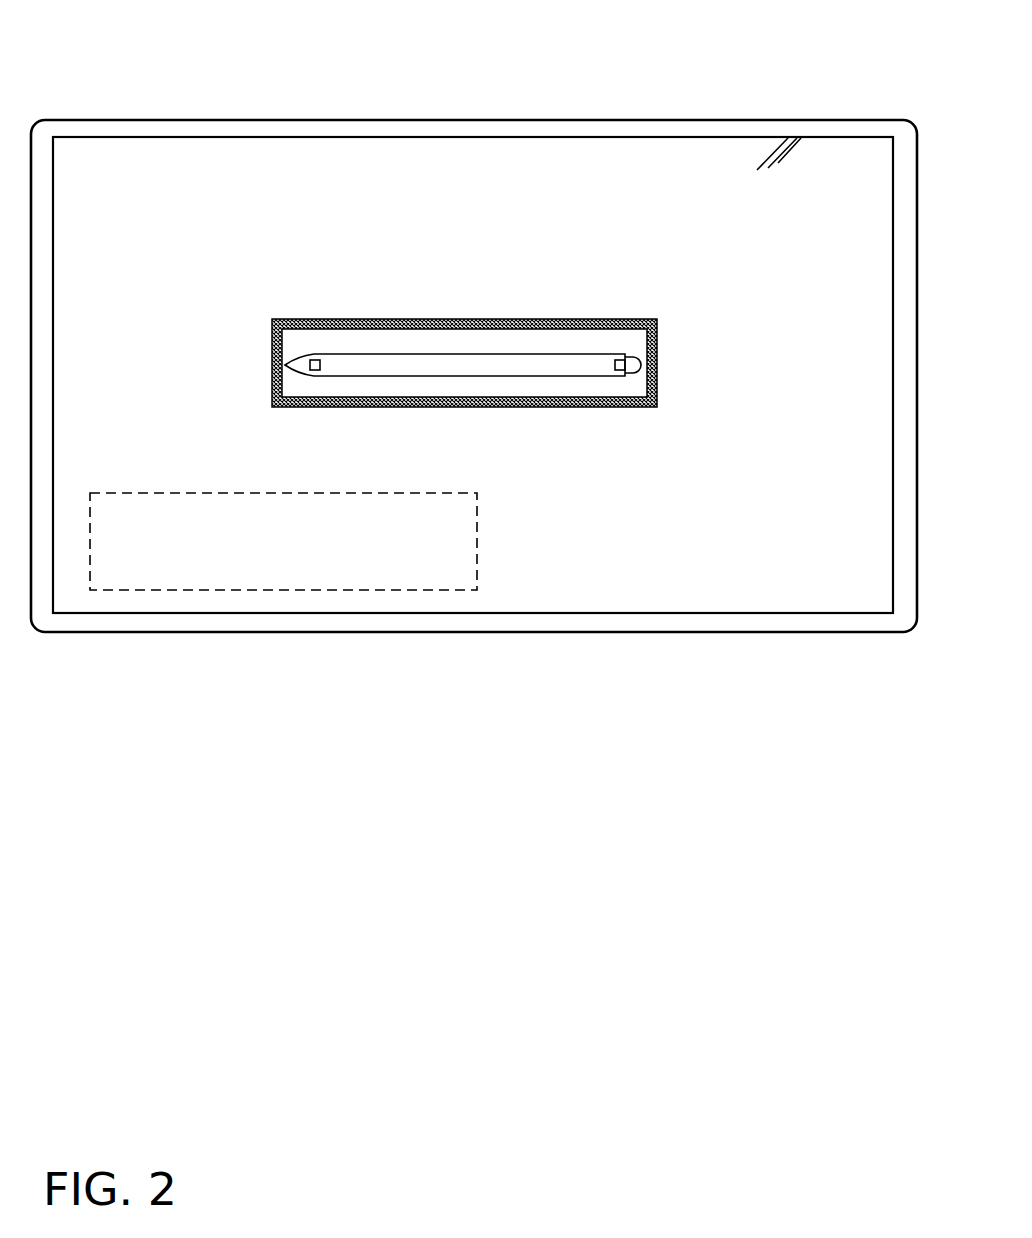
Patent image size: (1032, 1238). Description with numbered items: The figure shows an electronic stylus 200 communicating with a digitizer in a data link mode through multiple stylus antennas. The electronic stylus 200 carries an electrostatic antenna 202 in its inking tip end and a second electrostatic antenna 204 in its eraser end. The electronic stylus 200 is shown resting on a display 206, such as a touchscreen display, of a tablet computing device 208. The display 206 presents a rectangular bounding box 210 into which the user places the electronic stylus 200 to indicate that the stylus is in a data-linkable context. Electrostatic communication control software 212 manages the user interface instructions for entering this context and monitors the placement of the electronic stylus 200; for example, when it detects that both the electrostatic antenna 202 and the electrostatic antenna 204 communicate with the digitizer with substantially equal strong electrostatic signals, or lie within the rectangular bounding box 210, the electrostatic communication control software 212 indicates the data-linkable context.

The electronic stylus 200 is at (530, 365).
The electrostatic antenna 202 is at (311, 362).
The electrostatic antenna 204 is at (620, 360).
The display 206 is at (217, 193).
The tablet computing device 208 is at (374, 120).
The rectangular bounding box 210 is at (395, 322).
The electrostatic communication control software 212 is at (303, 583).